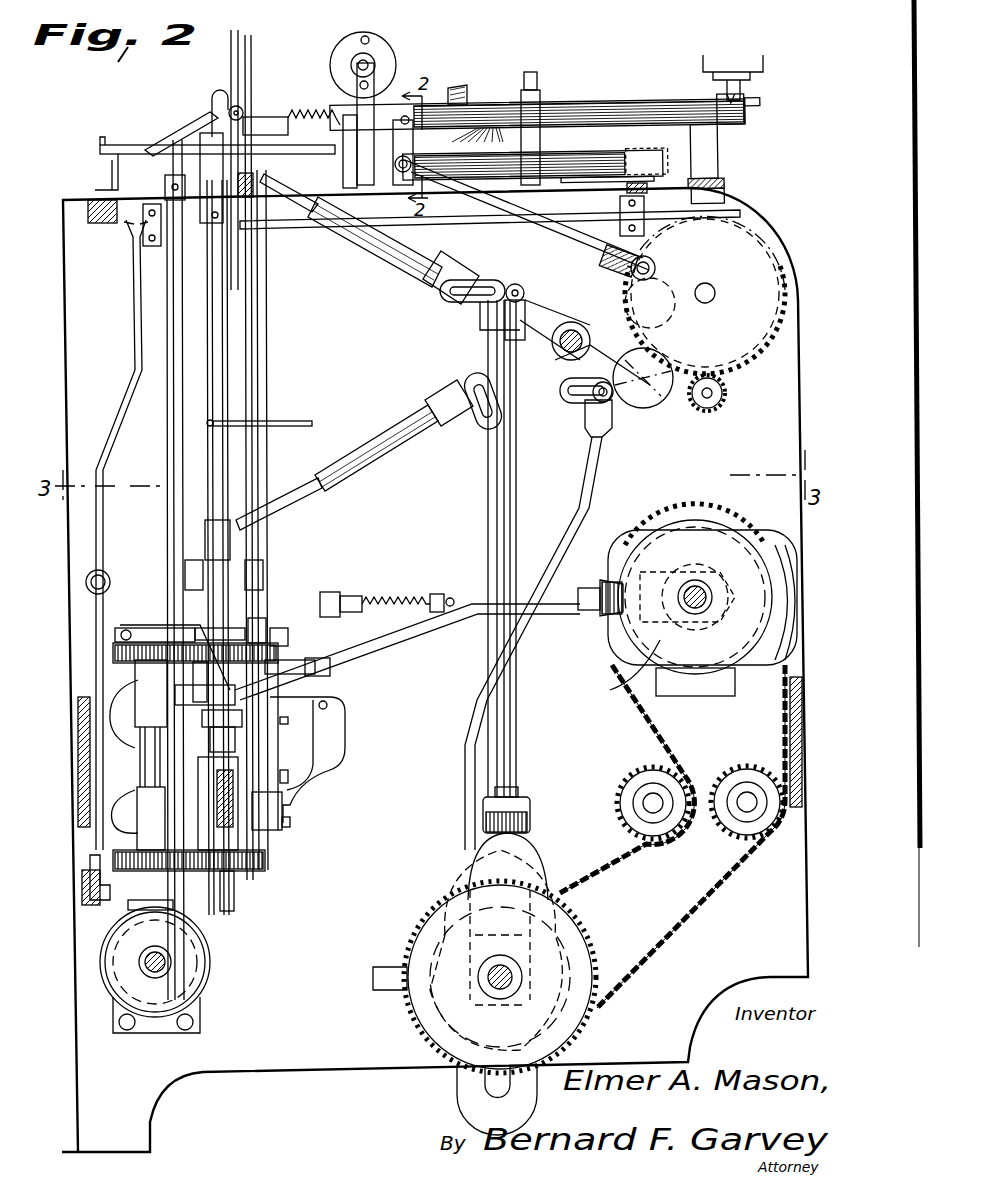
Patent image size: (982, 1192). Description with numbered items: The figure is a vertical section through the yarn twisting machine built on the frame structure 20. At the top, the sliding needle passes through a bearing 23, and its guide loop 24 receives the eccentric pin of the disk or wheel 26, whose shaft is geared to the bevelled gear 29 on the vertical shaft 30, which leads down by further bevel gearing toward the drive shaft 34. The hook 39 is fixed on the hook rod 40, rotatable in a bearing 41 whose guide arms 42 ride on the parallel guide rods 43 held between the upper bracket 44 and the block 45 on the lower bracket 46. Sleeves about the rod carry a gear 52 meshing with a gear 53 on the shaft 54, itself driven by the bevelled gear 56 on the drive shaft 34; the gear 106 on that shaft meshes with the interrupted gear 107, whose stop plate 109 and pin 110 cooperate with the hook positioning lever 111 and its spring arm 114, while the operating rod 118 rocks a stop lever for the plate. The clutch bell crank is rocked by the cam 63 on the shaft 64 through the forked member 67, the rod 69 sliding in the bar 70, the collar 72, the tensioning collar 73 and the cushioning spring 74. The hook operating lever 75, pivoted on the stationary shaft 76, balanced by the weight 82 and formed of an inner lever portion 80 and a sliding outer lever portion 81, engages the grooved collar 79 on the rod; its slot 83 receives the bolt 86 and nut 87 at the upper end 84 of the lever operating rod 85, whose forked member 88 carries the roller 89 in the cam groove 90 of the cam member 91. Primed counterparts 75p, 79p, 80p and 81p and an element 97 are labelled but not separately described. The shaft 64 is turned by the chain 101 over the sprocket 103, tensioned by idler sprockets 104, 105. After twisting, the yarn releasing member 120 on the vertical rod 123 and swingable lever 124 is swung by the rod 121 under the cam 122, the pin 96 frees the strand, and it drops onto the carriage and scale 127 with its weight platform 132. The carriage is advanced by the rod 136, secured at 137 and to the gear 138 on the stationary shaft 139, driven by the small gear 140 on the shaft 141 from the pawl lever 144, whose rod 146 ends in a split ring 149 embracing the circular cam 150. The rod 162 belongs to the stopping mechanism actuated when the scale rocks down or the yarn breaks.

The frame structure 20 is at (462, 95).
The bearing 23 is at (228, 112).
The guide loop 24 is at (231, 55).
The disk or wheel 26 is at (252, 62).
The bevelled gear 29 is at (495, 130).
The vertical shaft 30 is at (488, 498).
The drive shaft 34 is at (170, 962).
The hook 39 is at (210, 100).
The hook rod 40 is at (228, 318).
The bearing 41 is at (196, 228).
The guide arms 42 is at (258, 170).
The guide rods 43 is at (268, 268).
The bracket 44 is at (100, 152).
The block 45 is at (270, 837).
The bracket 46 is at (120, 812).
The gear 52 is at (255, 871).
The gear 53 is at (180, 871).
The shaft 54 is at (137, 765).
The bevelled gear 56 is at (205, 950).
The cam 63 is at (752, 530).
The shaft 64 is at (695, 597).
The forked member 67 is at (580, 612).
The rod 69 is at (452, 598).
The bar 70 is at (348, 594).
The collar 72 is at (360, 598).
The second collar 73 is at (438, 594).
The spring 74 is at (410, 600).
The hook operating lever 75 is at (428, 285).
The head 75p is at (378, 440).
The stationary shaft 76 is at (562, 392).
The grooved collar 79 is at (200, 138).
The lever 79p is at (210, 527).
The inner lever portion 80 is at (380, 258).
The arm 80p is at (400, 447).
The outer lever portion 81 is at (296, 212).
The pivot 81p is at (300, 500).
The weight 82 is at (645, 410).
The elongated slot 83 is at (468, 305).
The upper end 84 is at (553, 318).
The lever operating rod 85 is at (517, 488).
The bolt 86 is at (590, 278).
The nut 87 is at (514, 284).
The forked member 88 is at (530, 820).
The roller 89 is at (535, 846).
The cam groove 90 is at (552, 892).
The cam member 91 is at (590, 990).
The pin 96 is at (366, 36).
The pulley 97 is at (385, 50).
The chain 101 is at (730, 868).
The sprocket 103 is at (690, 696).
The idler sprocket 104 is at (738, 776).
The idler sprocket 105 is at (640, 775).
The gear 106 is at (115, 650).
The gear 107 is at (293, 631).
The stop plate 109 is at (195, 636).
The pin 110 is at (262, 622).
The hook positioning lever 111 is at (297, 658).
The arm 114 is at (155, 622).
The operating rod 118 is at (395, 625).
The yarn releasing member 120 is at (288, 422).
The rod 121 is at (358, 672).
The cam 122 is at (645, 640).
The vertical rod 123 is at (218, 462).
The horizontally swingable lever 124 is at (245, 718).
The carriage and scale 127 is at (575, 112).
The platform 132 is at (725, 62).
The rod 136 is at (562, 218).
The securing point 137 is at (531, 166).
The gear 138 is at (768, 352).
The stationary shaft 139 is at (710, 286).
The gear 140 is at (718, 410).
The shaft 141 is at (705, 400).
The lever 144 is at (620, 438).
The rod 146 is at (580, 512).
The split ring 149 is at (405, 995).
The circular cam 150 is at (425, 922).
The rod 162 is at (125, 390).